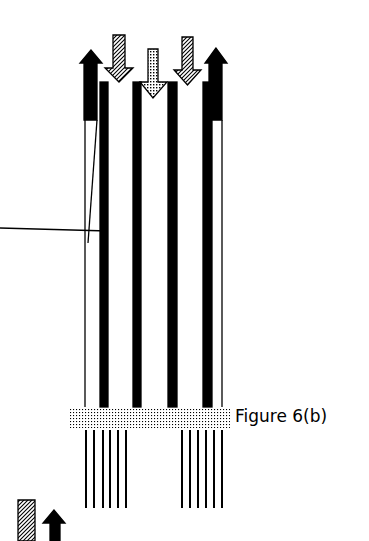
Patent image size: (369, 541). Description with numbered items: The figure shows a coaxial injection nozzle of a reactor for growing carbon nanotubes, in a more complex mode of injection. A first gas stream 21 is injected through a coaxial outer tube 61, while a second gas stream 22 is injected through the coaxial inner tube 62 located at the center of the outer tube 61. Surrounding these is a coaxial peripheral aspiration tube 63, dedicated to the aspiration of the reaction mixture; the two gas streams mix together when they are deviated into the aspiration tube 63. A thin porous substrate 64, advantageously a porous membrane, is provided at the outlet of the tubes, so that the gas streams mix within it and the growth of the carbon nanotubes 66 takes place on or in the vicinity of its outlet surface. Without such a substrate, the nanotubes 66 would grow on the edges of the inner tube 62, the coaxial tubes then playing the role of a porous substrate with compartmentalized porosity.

The first gas stream 21 is at (153, 66).
The second gas stream 22 is at (109, 280).
The outer tube 61 is at (150, 133).
The inner tube 62 is at (190, 182).
The peripheral aspiration tube 63 is at (88, 253).
The porous substrate 64 is at (100, 413).
The carbon nanotubes 66 is at (198, 472).